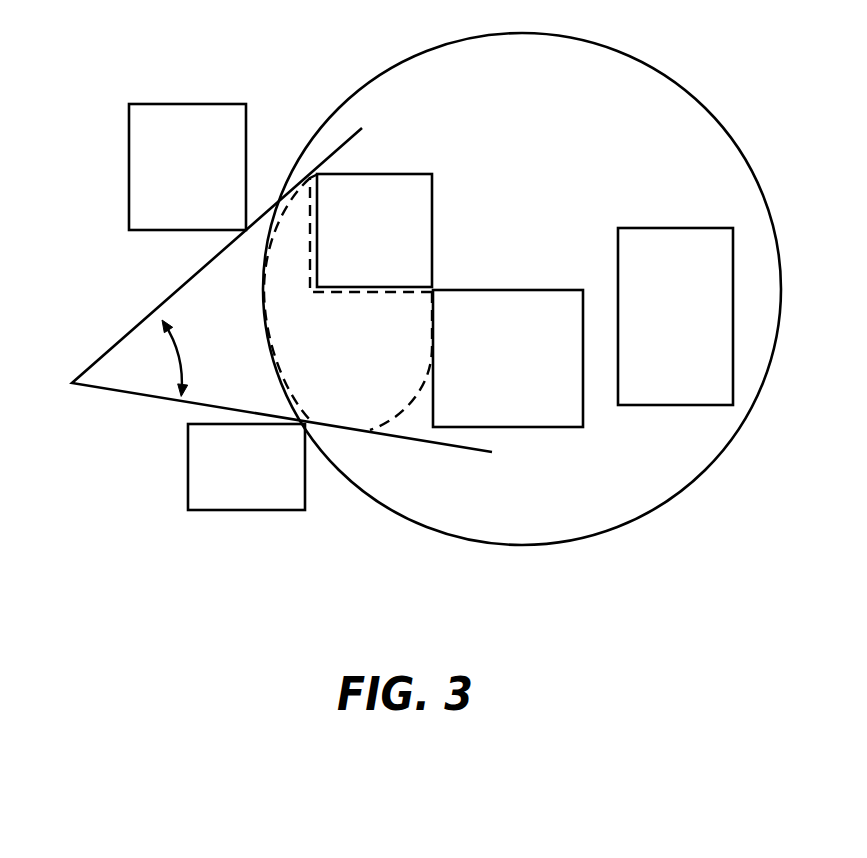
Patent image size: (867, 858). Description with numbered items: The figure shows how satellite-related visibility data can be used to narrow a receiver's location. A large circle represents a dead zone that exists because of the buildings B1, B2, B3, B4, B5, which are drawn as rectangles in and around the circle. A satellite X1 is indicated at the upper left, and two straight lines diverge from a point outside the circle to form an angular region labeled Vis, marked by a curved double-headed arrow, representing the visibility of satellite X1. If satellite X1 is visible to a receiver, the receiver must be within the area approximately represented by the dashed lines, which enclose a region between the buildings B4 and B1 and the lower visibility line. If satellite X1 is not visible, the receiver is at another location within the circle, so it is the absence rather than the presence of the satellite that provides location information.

The satellite X1 is at (259, 282).
The visual field angle (field of view) Vis is at (155, 358).
The building B1 is at (508, 358).
The building B2 is at (187, 167).
The building B3 is at (246, 467).
The building B4 is at (374, 230).
The building B5 is at (675, 316).